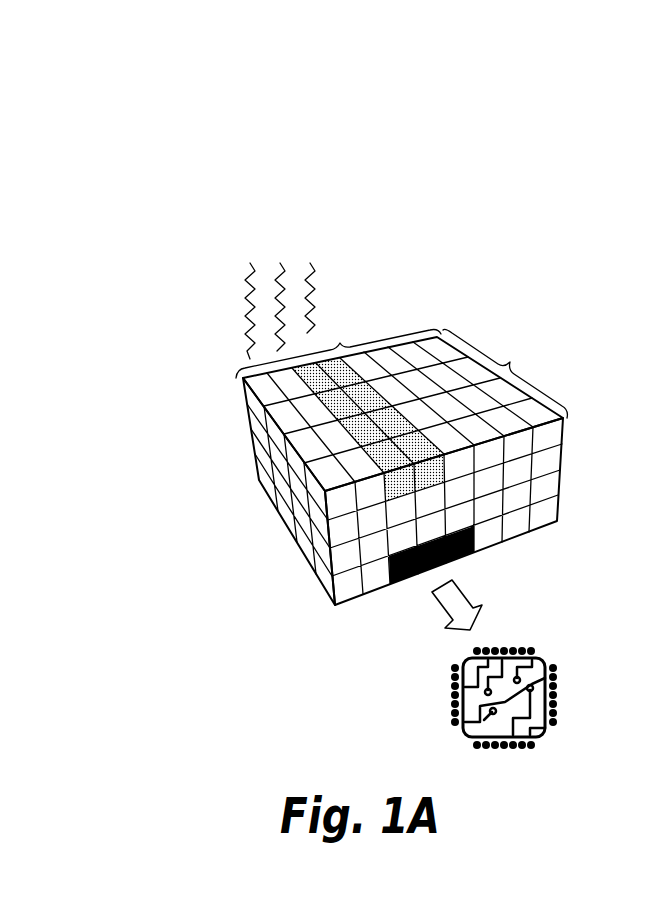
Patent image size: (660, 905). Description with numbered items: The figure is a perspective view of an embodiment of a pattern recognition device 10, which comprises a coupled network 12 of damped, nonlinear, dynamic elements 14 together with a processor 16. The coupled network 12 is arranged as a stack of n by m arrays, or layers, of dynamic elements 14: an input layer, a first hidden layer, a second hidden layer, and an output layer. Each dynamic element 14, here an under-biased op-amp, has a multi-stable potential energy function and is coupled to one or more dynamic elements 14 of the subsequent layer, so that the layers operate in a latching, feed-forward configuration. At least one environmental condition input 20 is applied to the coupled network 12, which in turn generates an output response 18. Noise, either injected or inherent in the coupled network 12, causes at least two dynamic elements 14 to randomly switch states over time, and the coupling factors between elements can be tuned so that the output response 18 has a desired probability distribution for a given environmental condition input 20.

The pattern recognition device 10 is at (199, 162).
The coupled network 12 is at (570, 418).
The dynamic element 14 is at (452, 358).
The processor 16 is at (515, 750).
The output response 18 is at (445, 625).
The environmental condition input 20 is at (345, 262).